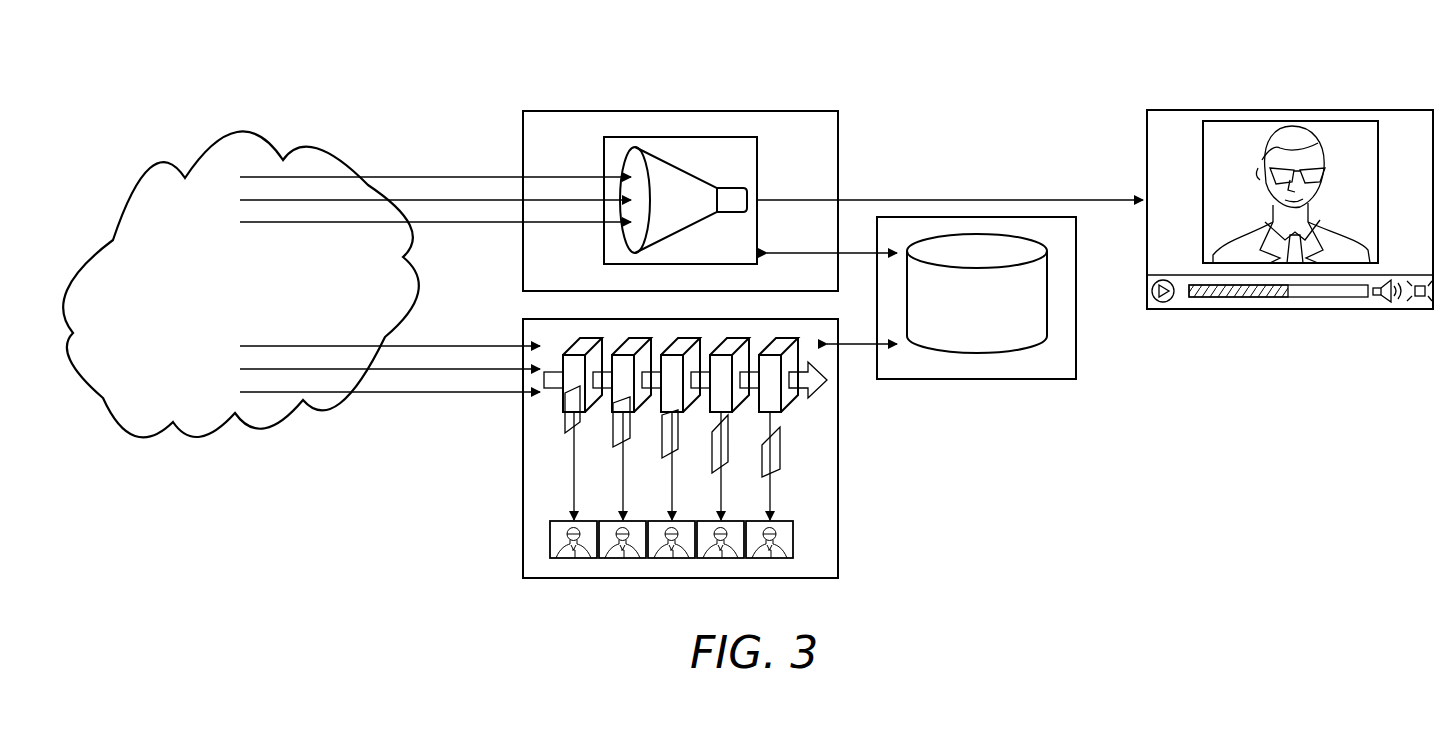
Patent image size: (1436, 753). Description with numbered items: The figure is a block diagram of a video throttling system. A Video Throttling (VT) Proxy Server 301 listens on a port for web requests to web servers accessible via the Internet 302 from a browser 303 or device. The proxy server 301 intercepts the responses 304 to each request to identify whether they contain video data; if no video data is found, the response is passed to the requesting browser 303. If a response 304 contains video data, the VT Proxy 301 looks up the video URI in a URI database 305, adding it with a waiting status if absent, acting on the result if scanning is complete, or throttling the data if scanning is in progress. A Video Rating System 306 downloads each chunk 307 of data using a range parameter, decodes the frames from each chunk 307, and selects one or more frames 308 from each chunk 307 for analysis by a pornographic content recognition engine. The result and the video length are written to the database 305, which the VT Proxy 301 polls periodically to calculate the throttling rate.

The Video Throttling (VT) Proxy Server 301 is at (625, 136).
The Internet 302 is at (234, 131).
The browser 303 is at (1172, 110).
The responses 304 is at (457, 196).
The URI database 305 is at (977, 380).
The Video Rating System 306 is at (691, 472).
The chunk 307 is at (617, 393).
The frames 308 is at (576, 560).